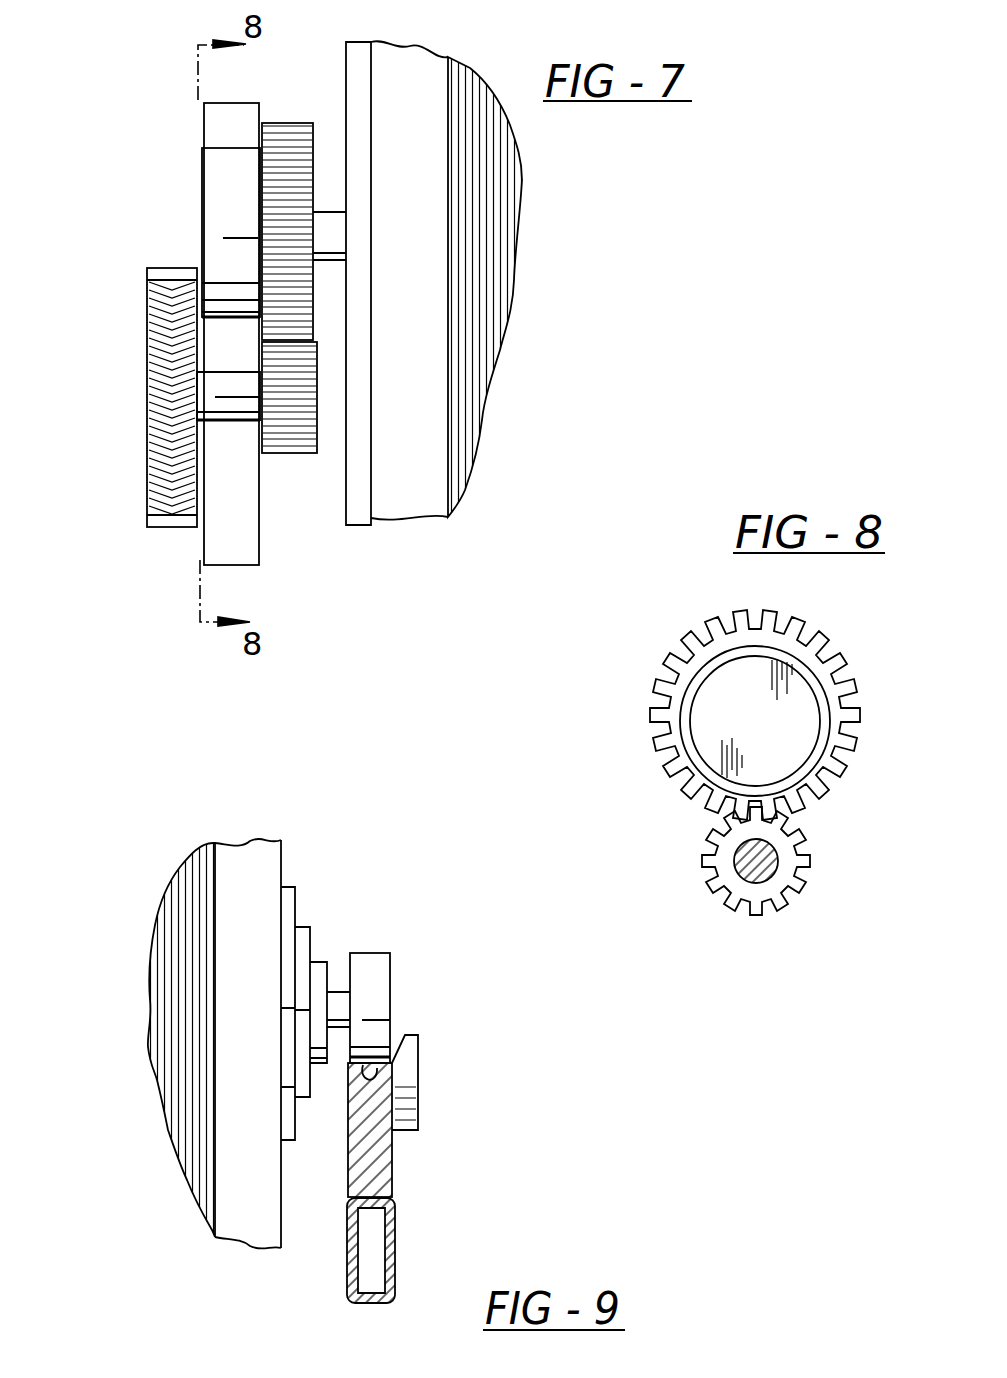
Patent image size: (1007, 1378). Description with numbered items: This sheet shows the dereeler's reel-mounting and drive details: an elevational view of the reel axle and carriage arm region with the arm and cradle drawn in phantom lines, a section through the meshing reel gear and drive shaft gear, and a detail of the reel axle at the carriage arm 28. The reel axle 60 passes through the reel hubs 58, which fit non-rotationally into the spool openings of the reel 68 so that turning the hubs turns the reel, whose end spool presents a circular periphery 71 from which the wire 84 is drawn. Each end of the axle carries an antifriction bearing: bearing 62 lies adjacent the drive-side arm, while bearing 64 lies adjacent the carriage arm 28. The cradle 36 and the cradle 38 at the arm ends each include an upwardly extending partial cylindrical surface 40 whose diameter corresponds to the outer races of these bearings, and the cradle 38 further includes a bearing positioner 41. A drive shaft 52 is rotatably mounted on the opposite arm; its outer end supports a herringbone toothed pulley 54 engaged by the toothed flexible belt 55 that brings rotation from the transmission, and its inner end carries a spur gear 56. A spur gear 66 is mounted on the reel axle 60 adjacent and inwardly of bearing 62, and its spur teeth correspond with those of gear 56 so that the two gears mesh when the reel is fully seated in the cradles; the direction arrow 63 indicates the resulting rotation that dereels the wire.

In FIG. 9, the carriage arm 28 is at (392, 1257).
In FIG. 7, the cradle 36 is at (232, 566).
In FIG. 9, the cradle 38 is at (373, 1167).
In FIG. 9, the partial cylindrical surface 40 is at (367, 1082).
In FIG. 9, the bearing positioner 41 is at (418, 1093).
In FIG. 7, the drive shaft 52 is at (238, 422).
In FIG. 8, the drive shaft 52 is at (732, 863).
In FIG. 7, the herringbone toothed pulley 54 is at (147, 356).
In FIG. 7, the toothed flexible belt 55 is at (163, 527).
In FIG. 7, the spur gear 56 is at (297, 453).
In FIG. 8, the spur gear 56 is at (774, 884).
In FIG. 7, the reel hub 58 is at (358, 522).
In FIG. 9, the reel hub 58 is at (285, 897).
In FIG. 7, the reel axle 60 is at (346, 210).
In FIG. 8, the reel axle 60 is at (800, 756).
In FIG. 9, the reel axle 60 is at (337, 990).
In FIG. 7, the bearing 62 is at (219, 182).
In FIG. 8, the bearing 62 is at (794, 669).
In FIG. 7, the direction arrow 63 is at (500, 450).
In FIG. 9, the bearing 64 is at (377, 967).
In FIG. 7, the spur gear 66 is at (290, 123).
In FIG. 8, the spur gear 66 is at (831, 702).
In FIG. 9, the reel 68 is at (220, 1268).
In FIG. 7, the circular periphery 71 is at (425, 433).
In FIG. 9, the circular periphery 71 is at (262, 857).
In FIG. 7, the wire 84 is at (490, 345).
In FIG. 9, the wire 84 is at (170, 998).